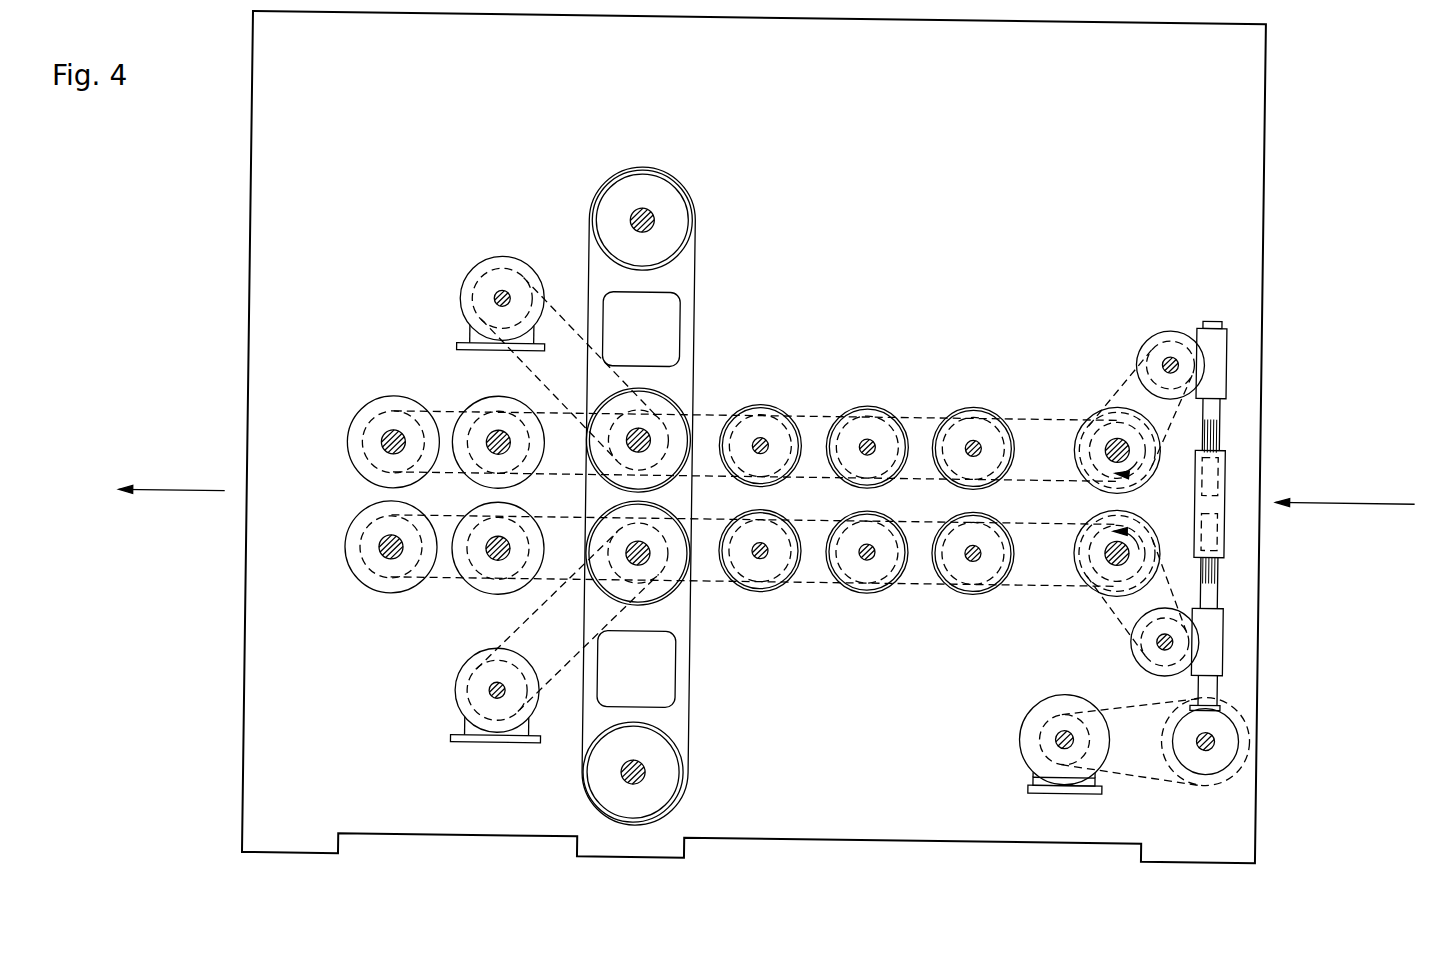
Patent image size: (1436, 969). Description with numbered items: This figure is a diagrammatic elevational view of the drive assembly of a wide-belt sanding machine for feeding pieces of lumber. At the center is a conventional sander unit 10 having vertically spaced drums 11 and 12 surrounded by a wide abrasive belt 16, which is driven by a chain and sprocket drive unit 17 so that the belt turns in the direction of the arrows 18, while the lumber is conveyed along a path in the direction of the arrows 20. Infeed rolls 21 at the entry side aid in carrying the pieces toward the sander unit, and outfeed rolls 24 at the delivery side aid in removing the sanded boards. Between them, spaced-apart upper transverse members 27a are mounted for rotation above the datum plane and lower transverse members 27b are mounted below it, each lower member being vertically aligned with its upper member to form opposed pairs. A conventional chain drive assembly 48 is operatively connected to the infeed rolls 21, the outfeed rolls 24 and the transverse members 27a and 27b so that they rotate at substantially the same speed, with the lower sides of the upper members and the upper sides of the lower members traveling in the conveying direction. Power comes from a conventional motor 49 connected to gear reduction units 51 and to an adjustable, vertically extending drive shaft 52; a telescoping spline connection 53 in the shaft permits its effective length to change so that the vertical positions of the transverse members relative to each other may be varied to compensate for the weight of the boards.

The sander unit 10 is at (704, 320).
The drum 11 is at (683, 219).
The drum 12 is at (665, 405).
The abrasive belt 16 is at (698, 266).
The chain and sprocket drive unit 17 is at (571, 309).
The arrow 18 is at (629, 190).
The arrow 20 is at (1358, 489).
The infeed roll 21 is at (1104, 477).
The outfeed roll 24 is at (380, 396).
The upper transverse member 27a is at (778, 400).
The lower transverse member 27b is at (771, 584).
The chain drive assembly 48 is at (1066, 584).
The motor 49 is at (1040, 727).
The gear reduction unit 51 is at (1216, 349).
The drive shaft 52 is at (1221, 585).
The telescoping spline connection 53 is at (1232, 529).